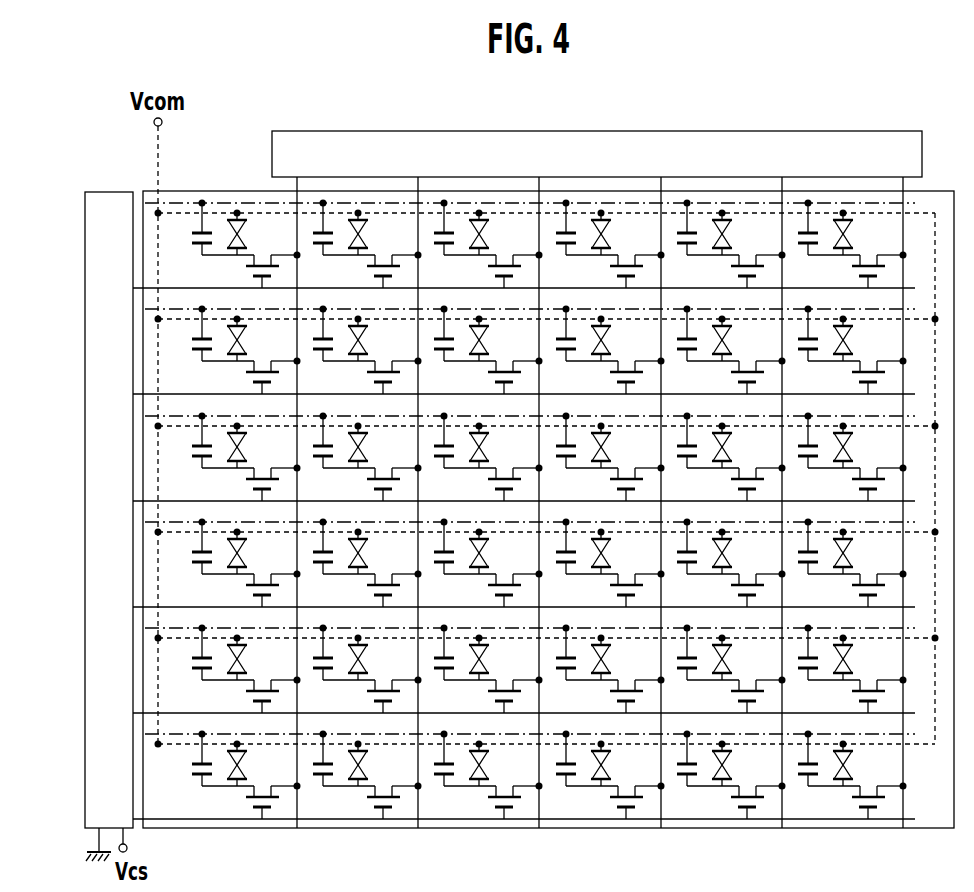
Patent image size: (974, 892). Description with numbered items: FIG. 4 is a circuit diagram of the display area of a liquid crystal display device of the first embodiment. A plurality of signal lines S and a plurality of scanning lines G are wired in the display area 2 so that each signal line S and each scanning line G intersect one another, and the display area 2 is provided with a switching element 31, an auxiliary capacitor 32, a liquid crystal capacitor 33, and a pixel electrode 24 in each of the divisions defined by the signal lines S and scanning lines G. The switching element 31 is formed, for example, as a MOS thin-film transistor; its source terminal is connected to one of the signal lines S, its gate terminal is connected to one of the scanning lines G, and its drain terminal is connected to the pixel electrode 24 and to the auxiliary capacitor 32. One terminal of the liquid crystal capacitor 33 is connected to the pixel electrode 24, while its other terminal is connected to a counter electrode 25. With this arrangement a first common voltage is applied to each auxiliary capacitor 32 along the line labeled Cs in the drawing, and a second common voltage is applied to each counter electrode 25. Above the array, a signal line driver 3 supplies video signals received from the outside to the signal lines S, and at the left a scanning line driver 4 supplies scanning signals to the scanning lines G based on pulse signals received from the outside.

The display area 2 is at (190, 832).
The signal line driver 3 is at (311, 132).
The scanning line driver 4 is at (85, 722).
The pixel electrode 24 is at (228, 256).
The counter electrode 25 is at (236, 211).
The switching element 31 is at (253, 276).
The auxiliary capacitor 32 is at (190, 242).
The liquid crystal capacitor 33 is at (246, 239).
The signal line S is at (300, 256).
The scanning line G is at (190, 288).
The storage capacitor line Cs is at (191, 203).